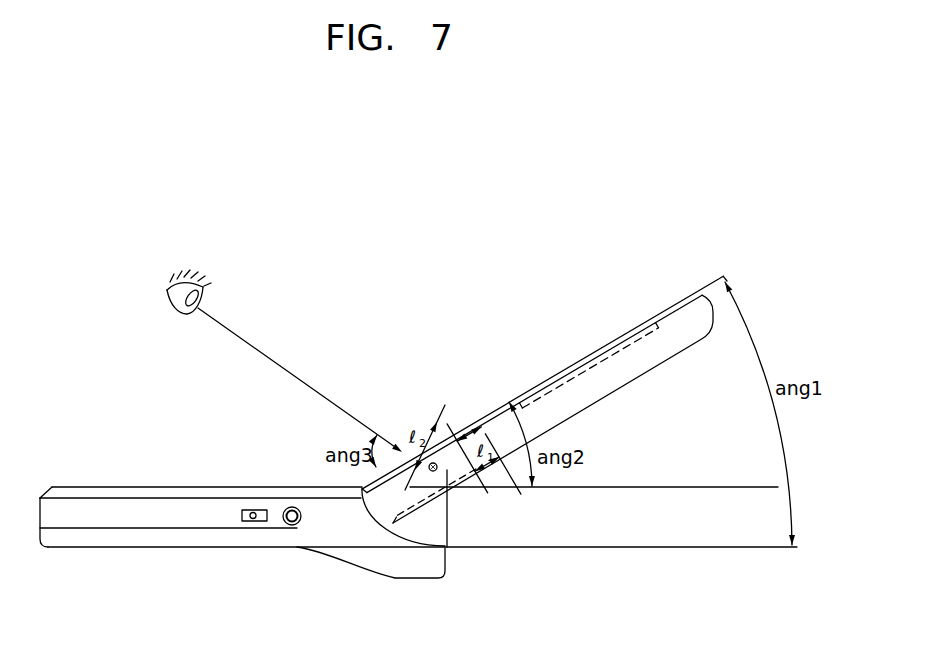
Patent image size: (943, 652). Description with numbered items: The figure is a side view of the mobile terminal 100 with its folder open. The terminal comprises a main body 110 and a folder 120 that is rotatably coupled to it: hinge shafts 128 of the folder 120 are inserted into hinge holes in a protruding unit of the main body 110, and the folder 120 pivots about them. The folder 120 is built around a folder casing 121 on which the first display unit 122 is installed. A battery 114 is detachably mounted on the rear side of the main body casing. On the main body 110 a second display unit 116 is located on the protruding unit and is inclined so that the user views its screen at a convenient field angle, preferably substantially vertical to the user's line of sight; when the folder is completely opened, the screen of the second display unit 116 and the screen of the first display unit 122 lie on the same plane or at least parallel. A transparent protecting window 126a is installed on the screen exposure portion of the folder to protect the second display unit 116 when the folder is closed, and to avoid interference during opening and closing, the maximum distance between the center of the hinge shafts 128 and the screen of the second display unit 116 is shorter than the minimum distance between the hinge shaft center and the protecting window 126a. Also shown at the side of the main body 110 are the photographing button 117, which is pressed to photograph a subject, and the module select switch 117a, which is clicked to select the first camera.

The mobile terminal 100 is at (348, 322).
The main body 110 is at (107, 472).
The battery 114 is at (152, 540).
The second display unit 116 is at (405, 477).
The photographing button 117 is at (294, 525).
The module select switch 117a is at (253, 522).
The folder 120 is at (521, 371).
The folder casing 121 is at (563, 410).
The first display unit 122 is at (590, 358).
The transparent protecting window 126a is at (449, 548).
The hinge shafts 128 is at (438, 468).